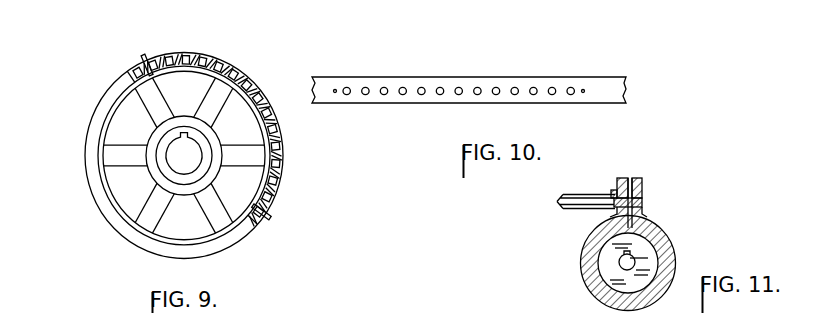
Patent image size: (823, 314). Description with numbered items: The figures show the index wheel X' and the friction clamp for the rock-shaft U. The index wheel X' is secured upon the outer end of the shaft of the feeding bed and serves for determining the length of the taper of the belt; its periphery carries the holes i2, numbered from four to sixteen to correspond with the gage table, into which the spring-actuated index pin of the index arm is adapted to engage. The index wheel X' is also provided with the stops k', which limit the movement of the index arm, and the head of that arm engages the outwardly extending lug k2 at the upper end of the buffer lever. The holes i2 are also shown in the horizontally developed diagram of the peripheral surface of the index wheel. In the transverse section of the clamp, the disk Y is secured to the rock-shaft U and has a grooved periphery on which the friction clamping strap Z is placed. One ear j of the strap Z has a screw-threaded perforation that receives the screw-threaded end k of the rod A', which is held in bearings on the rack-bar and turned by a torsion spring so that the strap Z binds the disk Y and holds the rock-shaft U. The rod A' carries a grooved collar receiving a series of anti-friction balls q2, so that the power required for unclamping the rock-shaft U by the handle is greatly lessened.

In FIG. 9, the index wheel X' is at (161, 156).
In FIG. 9, the holes i2 is at (193, 62).
In FIG. 10, the holes i2 is at (458, 95).
In FIG. 11, the holes i2 is at (613, 193).
In FIG. 9, the stops k' is at (214, 126).
In FIG. 9, the outwardly extending lug k2 is at (162, 165).
In FIG. 11, the friction clamping strap Z is at (660, 234).
In FIG. 11, the disk Y is at (654, 263).
In FIG. 11, the rock-shaft U is at (626, 263).
In FIG. 11, the anti-friction balls q2 is at (628, 185).
In FIG. 11, the ear j is at (641, 180).
In FIG. 11, the screw-threaded end k is at (647, 195).
In FIG. 11, the rod A' is at (574, 218).